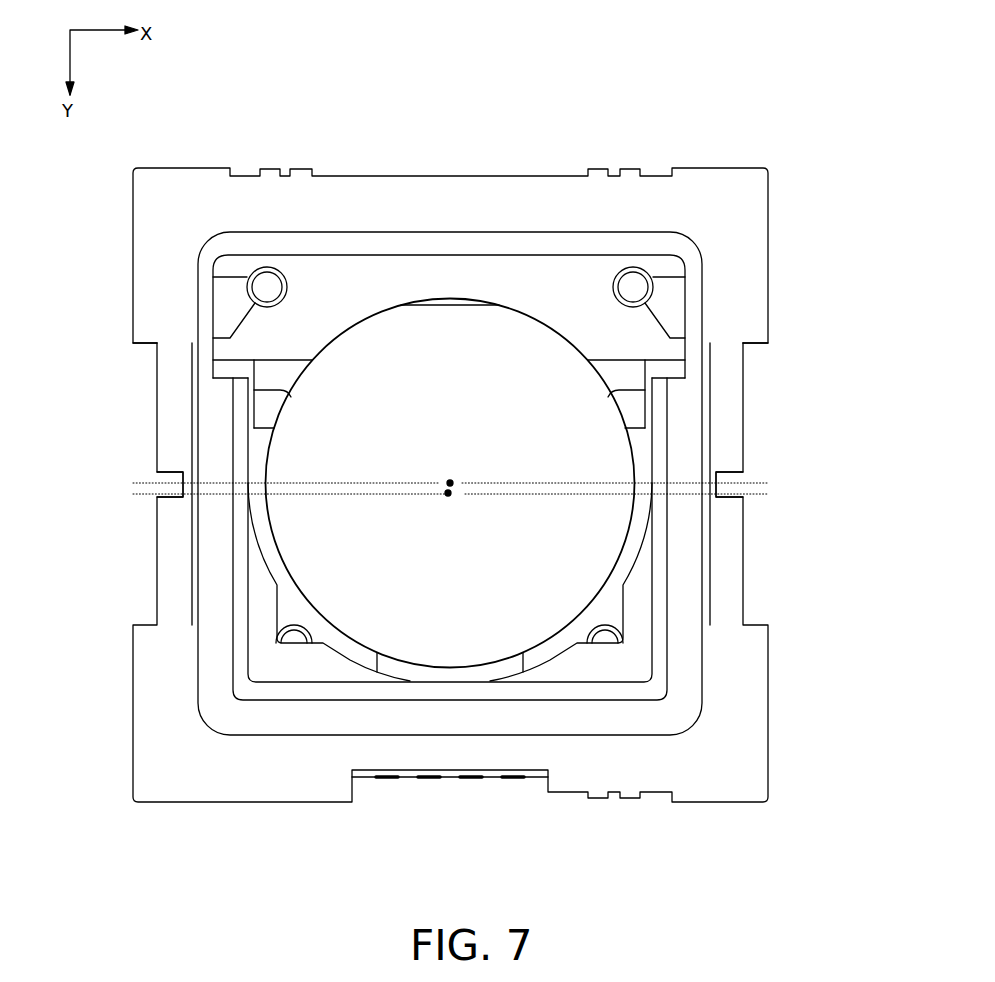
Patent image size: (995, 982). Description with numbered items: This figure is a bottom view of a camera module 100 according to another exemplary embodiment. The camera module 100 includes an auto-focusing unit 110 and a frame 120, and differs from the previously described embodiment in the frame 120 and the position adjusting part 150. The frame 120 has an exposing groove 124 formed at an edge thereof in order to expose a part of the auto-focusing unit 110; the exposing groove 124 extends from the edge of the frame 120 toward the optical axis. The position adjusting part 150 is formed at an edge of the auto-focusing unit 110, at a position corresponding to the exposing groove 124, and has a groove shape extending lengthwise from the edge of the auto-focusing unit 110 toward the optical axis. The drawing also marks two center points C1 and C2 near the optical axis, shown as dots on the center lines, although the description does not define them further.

The camera module 100 is at (742, 122).
The auto-focusing unit 110 is at (734, 413).
The frame 120 is at (747, 313).
The exposing groove 124 is at (758, 349).
The position adjusting part 150 is at (740, 486).
The center of lens C1 is at (464, 473).
The center of housing C2 is at (460, 507).